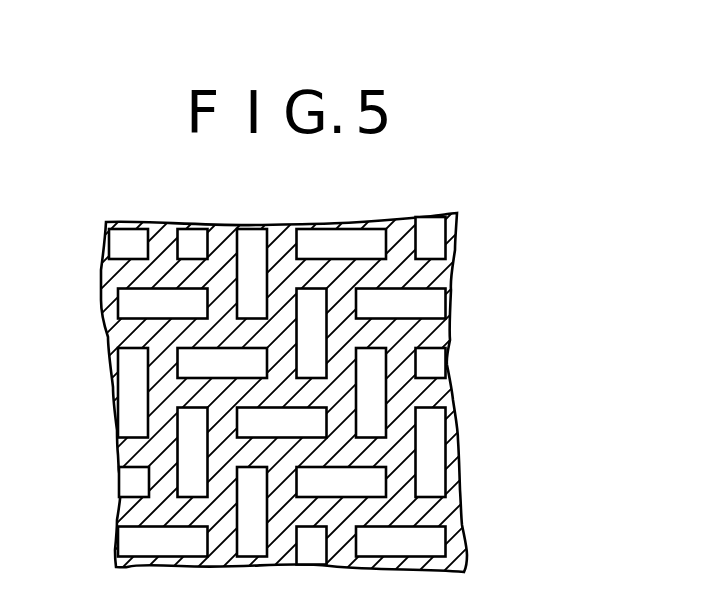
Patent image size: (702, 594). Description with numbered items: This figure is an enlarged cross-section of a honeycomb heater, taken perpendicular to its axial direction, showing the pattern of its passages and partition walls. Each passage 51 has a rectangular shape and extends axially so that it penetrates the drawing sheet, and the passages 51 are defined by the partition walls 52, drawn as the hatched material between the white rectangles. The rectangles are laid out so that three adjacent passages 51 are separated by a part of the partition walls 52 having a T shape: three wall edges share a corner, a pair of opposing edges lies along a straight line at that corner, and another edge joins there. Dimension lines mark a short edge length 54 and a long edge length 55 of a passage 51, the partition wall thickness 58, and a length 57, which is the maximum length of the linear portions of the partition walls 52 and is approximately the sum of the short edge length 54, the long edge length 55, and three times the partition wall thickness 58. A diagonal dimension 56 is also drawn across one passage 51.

The passage 51 is at (267, 226).
The partition wall 52 is at (315, 266).
The short edge length 54 is at (185, 349).
The long edge length 55 is at (326, 423).
The element diagonal 56 is at (206, 410).
The maximum length of linear portions of partition walls 57 is at (455, 494).
The partition wall thickness 58 is at (455, 316).